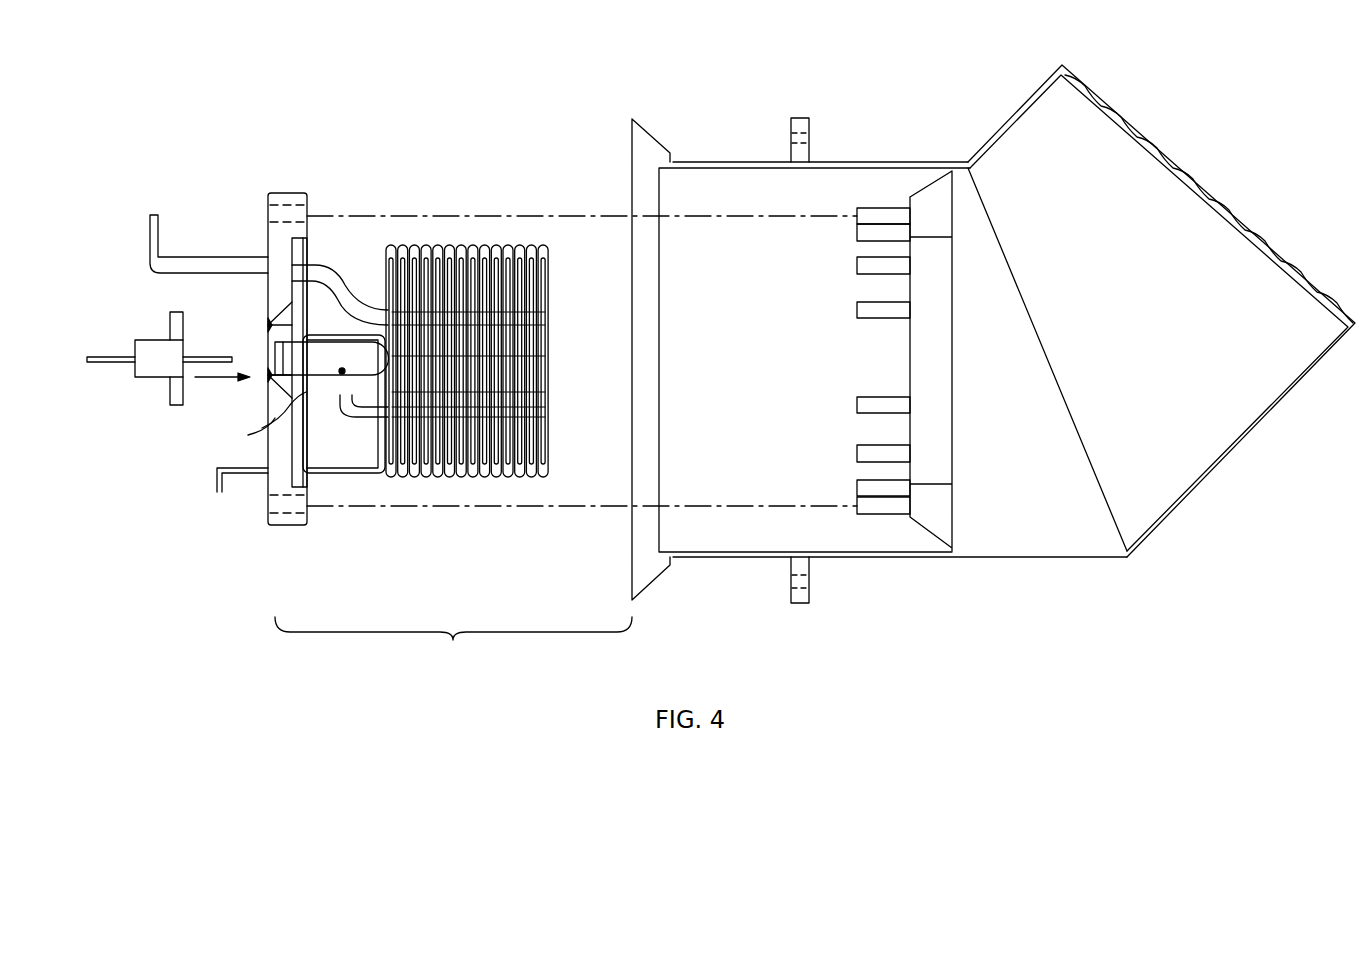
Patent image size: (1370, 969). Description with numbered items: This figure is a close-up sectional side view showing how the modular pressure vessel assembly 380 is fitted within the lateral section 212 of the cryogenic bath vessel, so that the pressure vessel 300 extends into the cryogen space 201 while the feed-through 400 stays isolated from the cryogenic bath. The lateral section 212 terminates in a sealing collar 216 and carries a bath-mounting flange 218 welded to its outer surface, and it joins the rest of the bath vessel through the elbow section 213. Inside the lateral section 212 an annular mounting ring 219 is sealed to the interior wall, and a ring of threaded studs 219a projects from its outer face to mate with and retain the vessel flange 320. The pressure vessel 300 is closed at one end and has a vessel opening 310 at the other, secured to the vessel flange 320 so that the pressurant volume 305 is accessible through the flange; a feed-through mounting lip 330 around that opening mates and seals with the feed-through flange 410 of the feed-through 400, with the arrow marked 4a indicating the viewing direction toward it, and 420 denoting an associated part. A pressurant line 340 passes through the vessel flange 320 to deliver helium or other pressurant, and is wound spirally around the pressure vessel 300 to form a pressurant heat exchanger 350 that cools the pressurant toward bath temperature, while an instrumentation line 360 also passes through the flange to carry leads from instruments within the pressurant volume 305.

The vessel flange 320 is at (288, 193).
The instrumentation line 360 is at (370, 317).
The pressurant heat exchanger 350 is at (545, 300).
The feed-through mounting lip 330 is at (268, 320).
The vessel opening 310 is at (273, 356).
The pressure vessel 300 is at (259, 425).
The pressurant volume 305 is at (362, 378).
The pressurant line 340 is at (247, 476).
The feed-through 400 is at (153, 343).
The rod 420 is at (105, 366).
The feed-through flange 410 is at (170, 396).
The view direction 4a is at (223, 379).
The pressure vessel assembly 380 is at (453, 650).
The sealing collar 216 is at (636, 148).
The lateral section 212 is at (736, 557).
The bath-mounting flange 218 is at (800, 603).
The mounting ring 219 is at (948, 508).
The threaded studs 219a is at (858, 412).
The elbow section 213 is at (1255, 426).
The cryogen space 201 is at (1160, 324).